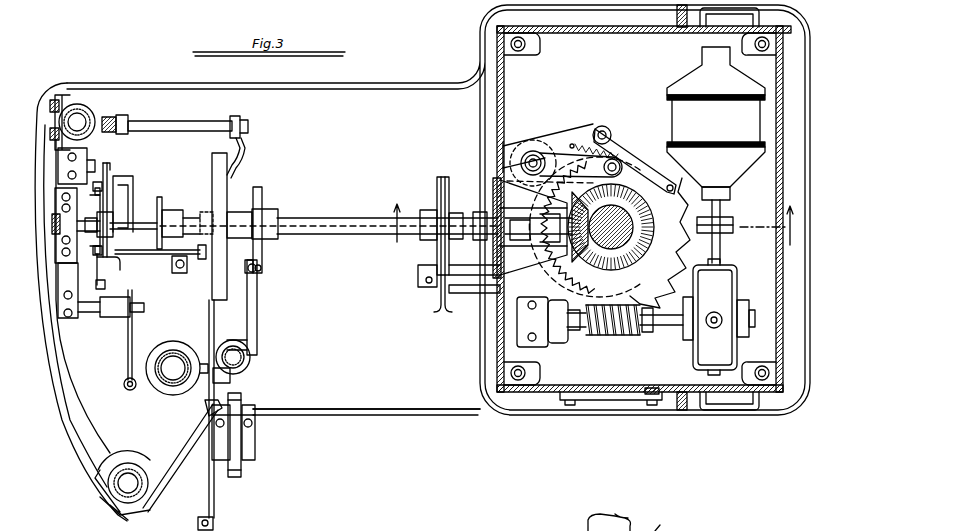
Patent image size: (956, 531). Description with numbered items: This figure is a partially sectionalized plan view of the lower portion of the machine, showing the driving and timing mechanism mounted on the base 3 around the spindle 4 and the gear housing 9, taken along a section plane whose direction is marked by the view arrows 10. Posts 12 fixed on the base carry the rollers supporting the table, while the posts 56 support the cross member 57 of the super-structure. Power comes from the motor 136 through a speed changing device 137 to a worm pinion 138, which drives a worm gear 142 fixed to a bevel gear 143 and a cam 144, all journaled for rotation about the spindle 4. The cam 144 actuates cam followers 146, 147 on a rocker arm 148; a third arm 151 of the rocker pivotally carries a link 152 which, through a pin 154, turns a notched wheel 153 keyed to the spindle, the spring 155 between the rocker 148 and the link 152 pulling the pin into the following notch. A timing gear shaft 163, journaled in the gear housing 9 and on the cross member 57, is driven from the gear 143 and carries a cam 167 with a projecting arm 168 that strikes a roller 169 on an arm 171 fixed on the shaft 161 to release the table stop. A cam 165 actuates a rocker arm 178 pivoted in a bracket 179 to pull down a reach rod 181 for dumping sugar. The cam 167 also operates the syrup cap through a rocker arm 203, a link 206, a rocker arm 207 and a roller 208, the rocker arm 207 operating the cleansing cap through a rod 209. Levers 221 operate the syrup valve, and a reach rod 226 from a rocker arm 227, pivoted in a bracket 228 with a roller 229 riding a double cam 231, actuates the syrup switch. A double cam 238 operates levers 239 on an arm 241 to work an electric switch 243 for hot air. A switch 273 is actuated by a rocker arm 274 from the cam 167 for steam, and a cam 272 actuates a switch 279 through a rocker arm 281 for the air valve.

The base 3 is at (403, 409).
The spindle 4 is at (609, 250).
The gear housing 9 is at (570, 30).
The direction arrow 10 is at (589, 234).
The posts 12 is at (174, 386).
The posts 56 is at (80, 108).
The cross member 57 is at (100, 418).
The motor 136 is at (692, 78).
The speed changing device 137 is at (723, 285).
The worm pinion 138 is at (626, 340).
The worm gear 142 is at (645, 292).
The bevel gear 143 is at (598, 232).
The cam 144 is at (548, 282).
The cam follower 146 is at (650, 172).
The cam follower 147 is at (500, 248).
The rocker arm 148 is at (548, 156).
The third arm 151 is at (570, 124).
The link 152 is at (626, 148).
The notched wheel 153 is at (720, 210).
The pin 154 is at (700, 180).
The spring 155 is at (596, 128).
The shaft 161 is at (110, 124).
The timing gear shaft 163 is at (340, 218).
The cam 165 is at (160, 197).
The cam 167 is at (228, 177).
The projecting arm 168 is at (242, 149).
The roller 169 is at (217, 105).
The arm 171 is at (165, 127).
The rocker arm 178 is at (133, 330).
The bracket 179 is at (100, 318).
The reach rod 181 is at (128, 392).
The rocker arm 203 is at (120, 250).
The link 206 is at (205, 258).
The rocker arm 207 is at (205, 494).
The roller 208 is at (212, 215).
The rod 209 is at (214, 523).
The levers 221 is at (108, 192).
The reach rod 226 is at (90, 270).
The rocker arm 227 is at (88, 223).
The bracket 228 is at (87, 158).
The roller 229 is at (135, 220).
The double cam 231 is at (120, 180).
The double cam 238 is at (440, 178).
The levers 239 is at (437, 264).
The arm 241 is at (475, 292).
The electric switch 243 is at (428, 285).
The cam 272 is at (262, 193).
The switch 273 is at (222, 476).
The rocker arm 274 is at (208, 311).
The switch 279 is at (252, 461).
The rocker arm 281 is at (257, 304).